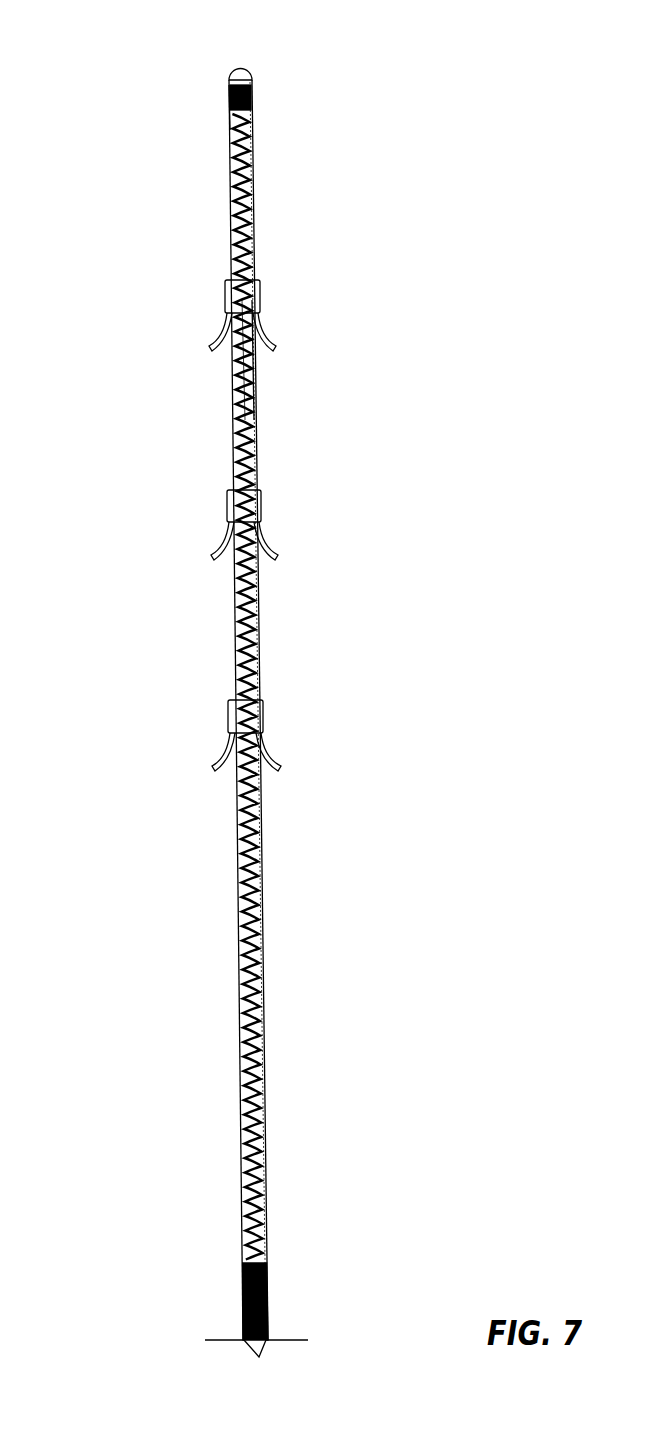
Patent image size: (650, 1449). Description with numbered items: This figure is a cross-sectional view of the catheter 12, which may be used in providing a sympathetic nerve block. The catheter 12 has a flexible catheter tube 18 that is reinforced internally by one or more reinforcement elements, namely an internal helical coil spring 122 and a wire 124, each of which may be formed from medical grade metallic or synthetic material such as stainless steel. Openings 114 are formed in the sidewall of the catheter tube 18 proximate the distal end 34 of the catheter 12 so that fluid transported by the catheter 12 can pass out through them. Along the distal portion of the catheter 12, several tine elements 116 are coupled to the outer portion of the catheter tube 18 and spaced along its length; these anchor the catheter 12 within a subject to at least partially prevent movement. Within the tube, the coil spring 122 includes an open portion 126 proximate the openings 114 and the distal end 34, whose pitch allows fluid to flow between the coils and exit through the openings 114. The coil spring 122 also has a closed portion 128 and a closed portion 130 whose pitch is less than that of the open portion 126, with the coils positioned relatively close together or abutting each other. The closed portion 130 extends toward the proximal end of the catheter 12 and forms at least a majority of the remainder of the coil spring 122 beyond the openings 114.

The catheter 12 is at (232, 678).
The distal end 34 is at (252, 58).
The wire 124 is at (250, 104).
The openings 114 is at (250, 121).
The closed portion 128 is at (222, 104).
The tine elements 116 is at (254, 292).
The internal helical coil spring 122 is at (236, 366).
The open portion 126 is at (270, 375).
The catheter tube 18 is at (234, 435).
The closed portion 130 is at (277, 1290).